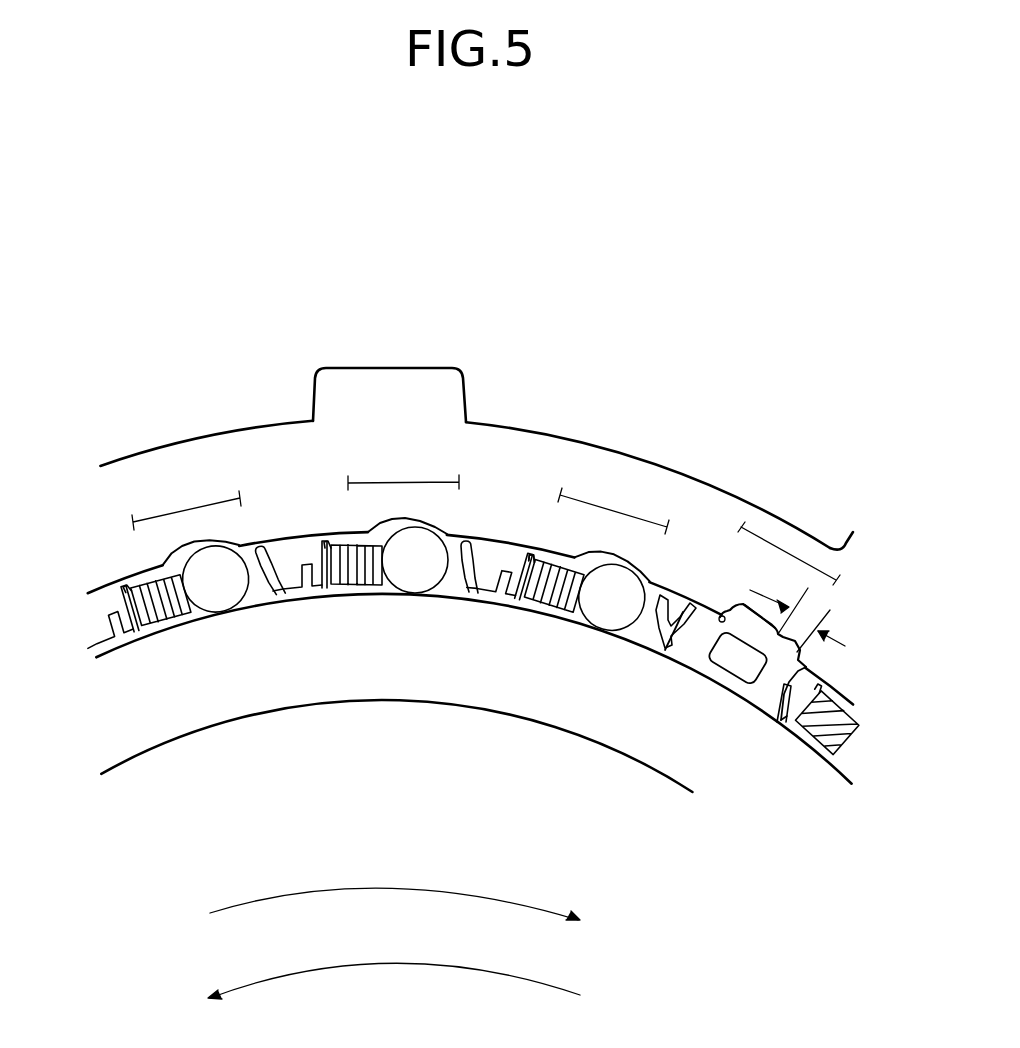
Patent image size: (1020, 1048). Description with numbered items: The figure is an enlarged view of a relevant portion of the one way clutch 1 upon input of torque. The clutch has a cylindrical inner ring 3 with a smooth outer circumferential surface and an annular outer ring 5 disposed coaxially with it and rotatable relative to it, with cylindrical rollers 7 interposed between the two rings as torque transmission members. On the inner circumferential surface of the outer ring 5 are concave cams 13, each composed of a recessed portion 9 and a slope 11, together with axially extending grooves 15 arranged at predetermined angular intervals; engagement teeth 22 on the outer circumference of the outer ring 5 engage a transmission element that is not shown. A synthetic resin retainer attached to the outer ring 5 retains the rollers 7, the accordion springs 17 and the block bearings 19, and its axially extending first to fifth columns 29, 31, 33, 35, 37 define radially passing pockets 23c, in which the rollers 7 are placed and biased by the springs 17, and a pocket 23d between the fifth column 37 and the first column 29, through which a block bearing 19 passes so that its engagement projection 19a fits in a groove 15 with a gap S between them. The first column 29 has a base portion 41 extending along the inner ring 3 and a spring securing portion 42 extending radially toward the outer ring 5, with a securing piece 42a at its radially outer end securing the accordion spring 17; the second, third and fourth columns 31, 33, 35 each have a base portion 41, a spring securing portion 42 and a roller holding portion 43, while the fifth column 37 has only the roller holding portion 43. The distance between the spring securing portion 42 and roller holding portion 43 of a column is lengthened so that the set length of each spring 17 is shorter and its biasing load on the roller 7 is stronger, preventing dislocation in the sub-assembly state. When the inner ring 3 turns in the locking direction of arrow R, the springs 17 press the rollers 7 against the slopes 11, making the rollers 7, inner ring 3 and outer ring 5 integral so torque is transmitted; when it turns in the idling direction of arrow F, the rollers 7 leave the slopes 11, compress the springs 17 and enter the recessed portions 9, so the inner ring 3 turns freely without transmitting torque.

The one way clutch 1 is at (656, 306).
The inner ring 3 is at (365, 678).
The outer ring 5 is at (501, 450).
The rollers 7 is at (210, 568).
The recessed portion 9 is at (402, 506).
The slope 11 is at (438, 528).
The concave cams 13 is at (426, 520).
The grooves 15 is at (757, 612).
The accordion springs 17 is at (552, 594).
The block bearing 19 is at (692, 652).
The engagement projection 19a is at (756, 626).
The engagement teeth 22 is at (330, 372).
The pockets 23c is at (197, 505).
The pocket 23d is at (802, 558).
The first column 29 is at (778, 720).
The second column 31 is at (122, 590).
The third column 33 is at (324, 540).
The fourth column 35 is at (518, 560).
The fifth column 37 is at (670, 632).
The base portion 41 is at (113, 654).
The spring securing portion 42 is at (140, 636).
The securing piece 42a is at (132, 586).
The roller holding portion 43 is at (256, 556).
The gap S is at (797, 620).
The arrow R is at (411, 913).
The arrow F is at (381, 991).